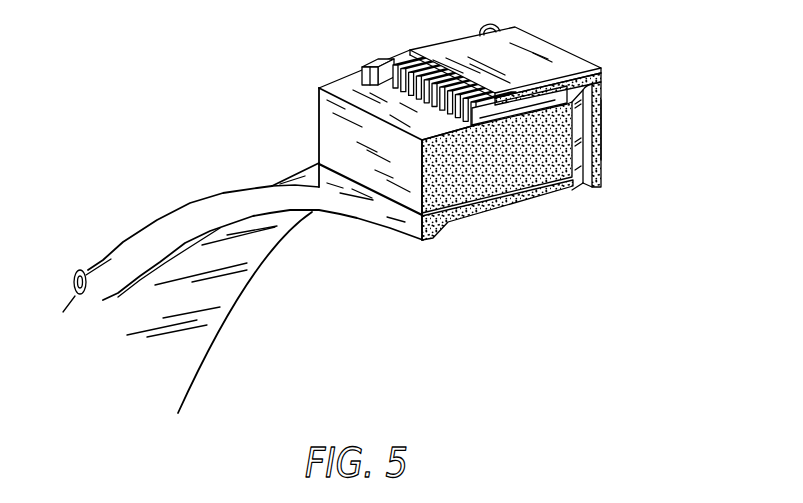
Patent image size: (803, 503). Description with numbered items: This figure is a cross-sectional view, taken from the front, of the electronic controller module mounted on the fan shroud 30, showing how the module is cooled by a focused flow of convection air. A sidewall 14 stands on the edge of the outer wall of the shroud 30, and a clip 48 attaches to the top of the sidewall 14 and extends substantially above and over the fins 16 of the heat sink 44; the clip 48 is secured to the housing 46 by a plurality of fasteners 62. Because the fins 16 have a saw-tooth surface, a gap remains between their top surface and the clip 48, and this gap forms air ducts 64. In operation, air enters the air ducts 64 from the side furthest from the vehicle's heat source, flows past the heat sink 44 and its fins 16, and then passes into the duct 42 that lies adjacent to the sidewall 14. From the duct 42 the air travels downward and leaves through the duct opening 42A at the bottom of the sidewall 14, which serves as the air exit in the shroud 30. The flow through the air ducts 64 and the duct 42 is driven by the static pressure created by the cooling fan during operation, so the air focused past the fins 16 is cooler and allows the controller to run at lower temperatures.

The sidewall 14 is at (601, 130).
The fins 16 is at (404, 54).
The shroud 30 is at (163, 193).
The duct 42 is at (603, 108).
The duct opening 42A is at (580, 184).
The heat sink 44 is at (534, 96).
The housing 46 is at (325, 128).
The clip 48 is at (562, 52).
The fasteners 62 is at (362, 68).
The air ducts 64 is at (604, 88).